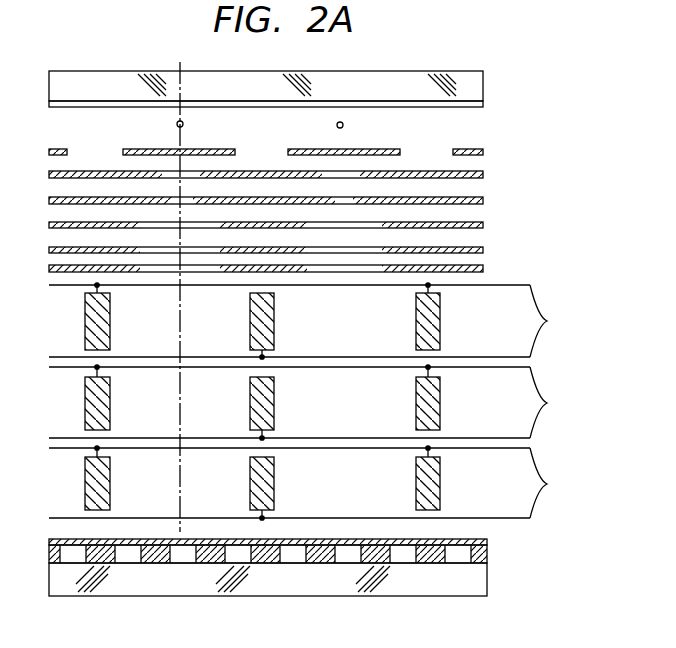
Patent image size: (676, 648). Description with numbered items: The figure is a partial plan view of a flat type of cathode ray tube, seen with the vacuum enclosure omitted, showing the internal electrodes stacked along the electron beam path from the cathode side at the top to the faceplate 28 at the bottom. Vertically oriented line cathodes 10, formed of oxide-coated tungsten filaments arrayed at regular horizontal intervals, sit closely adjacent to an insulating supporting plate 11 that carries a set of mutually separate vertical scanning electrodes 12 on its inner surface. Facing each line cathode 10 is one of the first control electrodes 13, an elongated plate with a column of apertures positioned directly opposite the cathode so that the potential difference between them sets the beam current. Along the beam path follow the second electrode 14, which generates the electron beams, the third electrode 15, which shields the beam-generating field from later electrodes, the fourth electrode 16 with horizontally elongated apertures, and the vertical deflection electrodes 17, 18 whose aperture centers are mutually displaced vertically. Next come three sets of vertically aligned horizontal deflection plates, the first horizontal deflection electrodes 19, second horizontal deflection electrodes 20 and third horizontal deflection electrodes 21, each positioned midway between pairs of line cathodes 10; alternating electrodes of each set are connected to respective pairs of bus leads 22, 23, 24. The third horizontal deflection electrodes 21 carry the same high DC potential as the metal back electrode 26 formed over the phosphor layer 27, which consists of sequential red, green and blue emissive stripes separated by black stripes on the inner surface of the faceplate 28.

The line cathodes 10 is at (343, 125).
The supporting plate 11 is at (470, 84).
The vertical scanning electrodes 12 is at (470, 108).
The first electrodes (G1 control electrodes) 13 is at (483, 152).
The second electrode (G2 electrode) 14 is at (483, 175).
The third electrode (G3 electrode) 15 is at (483, 201).
The fourth electrode (G4 electrode) 16 is at (483, 225).
The vertical deflection electrode 17 is at (483, 250).
The vertical deflection electrode 18 is at (483, 269).
The DH-1 horizontal deflection electrodes 19 is at (440, 318).
The DH-2 horizontal deflection electrodes 20 is at (440, 400).
The DH-3 horizontal deflection electrodes 21 is at (440, 480).
The bus leads 22 is at (547, 321).
The bus leads 23 is at (547, 403).
The bus leads 24 is at (547, 484).
The metal back electrode 26 is at (487, 540).
The phosphor layer 27 is at (487, 556).
The faceplate 28 is at (478, 583).